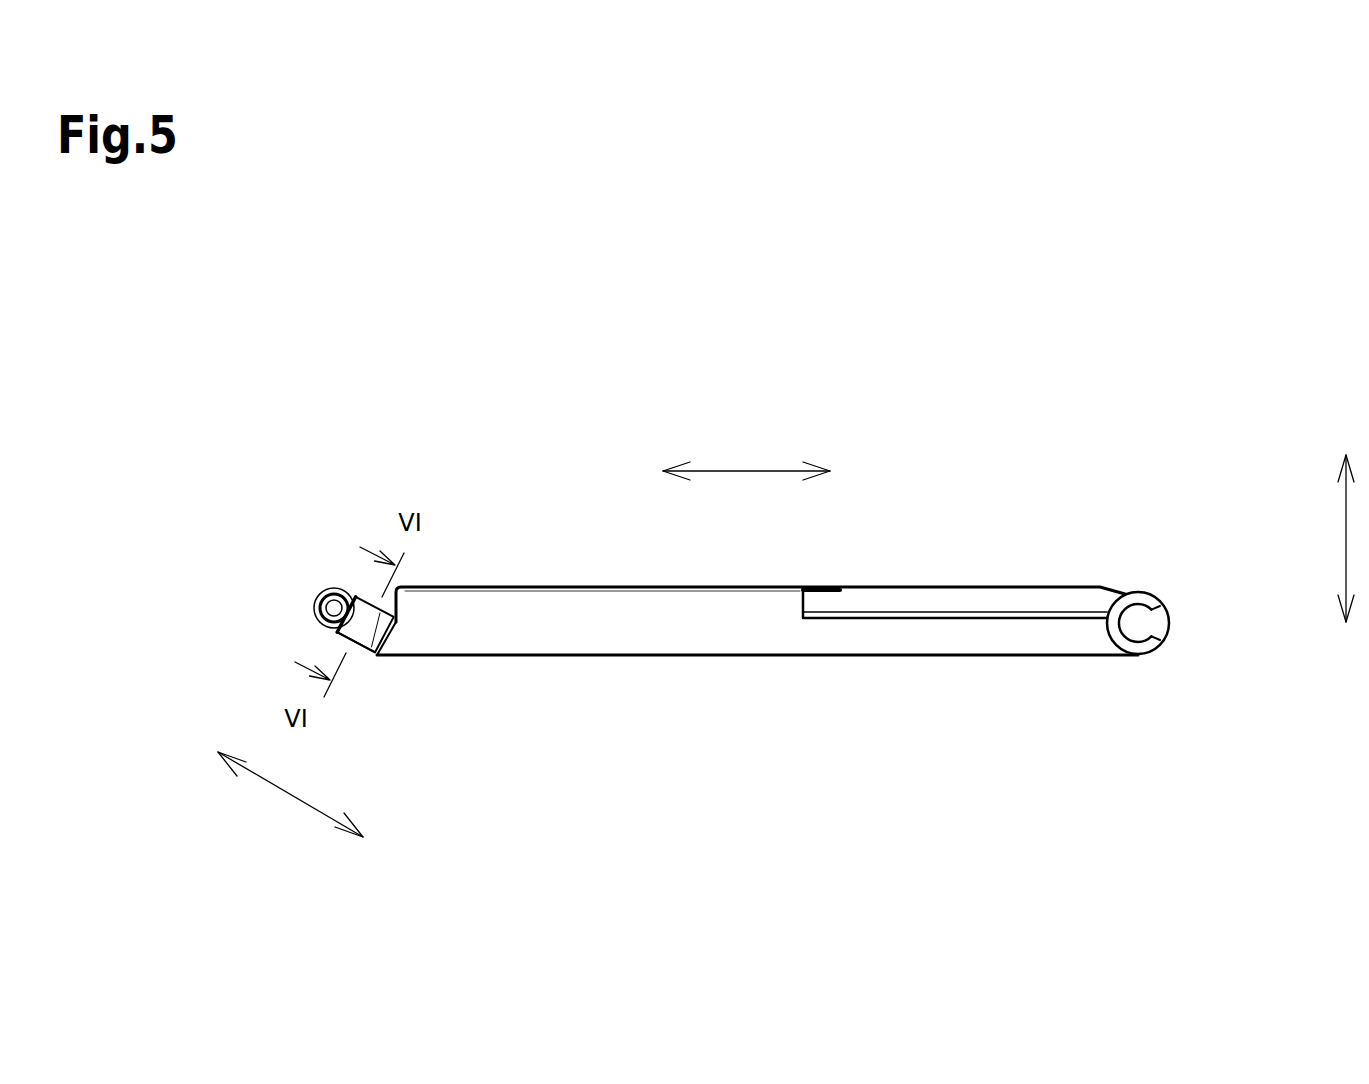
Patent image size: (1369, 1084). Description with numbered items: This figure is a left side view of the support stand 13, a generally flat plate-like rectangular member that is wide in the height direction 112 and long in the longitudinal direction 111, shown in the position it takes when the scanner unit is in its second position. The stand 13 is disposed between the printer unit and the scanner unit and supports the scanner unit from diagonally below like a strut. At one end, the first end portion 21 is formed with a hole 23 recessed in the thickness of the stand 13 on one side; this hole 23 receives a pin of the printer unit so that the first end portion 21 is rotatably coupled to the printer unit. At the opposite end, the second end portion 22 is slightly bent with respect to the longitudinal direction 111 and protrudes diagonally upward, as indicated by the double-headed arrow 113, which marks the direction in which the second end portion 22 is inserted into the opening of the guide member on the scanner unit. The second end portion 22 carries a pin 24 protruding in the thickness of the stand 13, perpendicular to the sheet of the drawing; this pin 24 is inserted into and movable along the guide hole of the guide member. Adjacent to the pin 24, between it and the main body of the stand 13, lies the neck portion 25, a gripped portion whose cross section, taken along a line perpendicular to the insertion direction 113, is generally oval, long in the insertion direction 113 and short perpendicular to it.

The support stand 13 is at (628, 675).
The first end portion 21 is at (1169, 626).
The second end portion 22 is at (322, 593).
The hole 23 is at (1120, 625).
The pin 24 is at (327, 608).
The neck portion 25 is at (358, 644).
The longitudinal direction 111 is at (744, 471).
The height direction 112 is at (1346, 538).
The insertion direction 113 is at (290, 795).